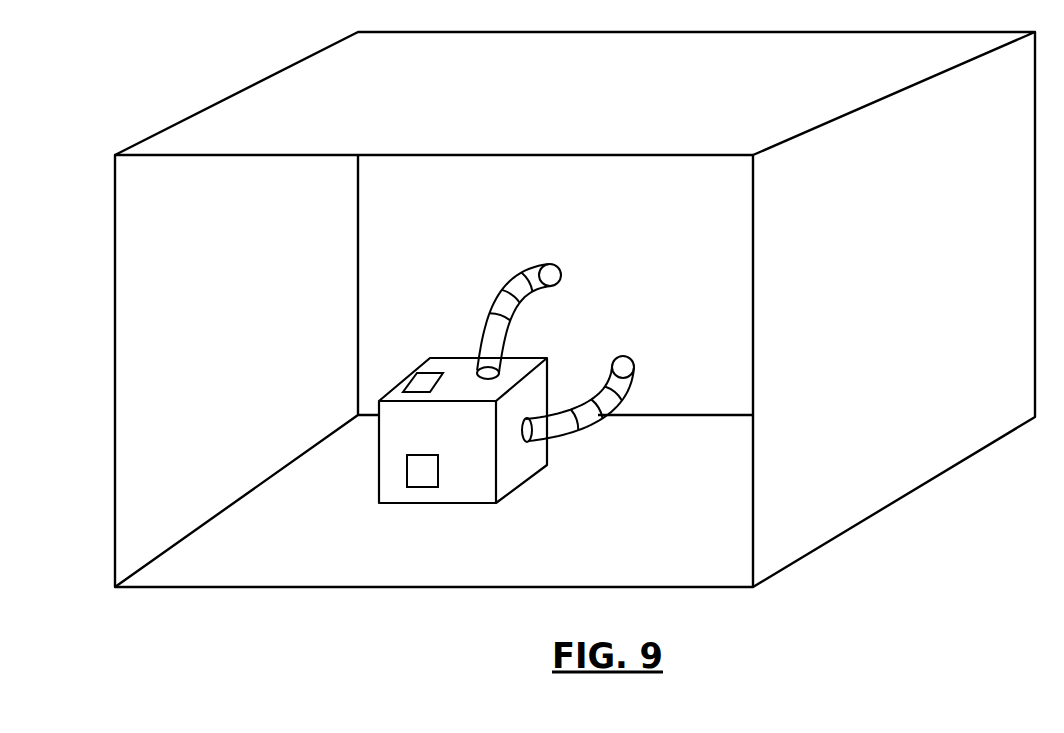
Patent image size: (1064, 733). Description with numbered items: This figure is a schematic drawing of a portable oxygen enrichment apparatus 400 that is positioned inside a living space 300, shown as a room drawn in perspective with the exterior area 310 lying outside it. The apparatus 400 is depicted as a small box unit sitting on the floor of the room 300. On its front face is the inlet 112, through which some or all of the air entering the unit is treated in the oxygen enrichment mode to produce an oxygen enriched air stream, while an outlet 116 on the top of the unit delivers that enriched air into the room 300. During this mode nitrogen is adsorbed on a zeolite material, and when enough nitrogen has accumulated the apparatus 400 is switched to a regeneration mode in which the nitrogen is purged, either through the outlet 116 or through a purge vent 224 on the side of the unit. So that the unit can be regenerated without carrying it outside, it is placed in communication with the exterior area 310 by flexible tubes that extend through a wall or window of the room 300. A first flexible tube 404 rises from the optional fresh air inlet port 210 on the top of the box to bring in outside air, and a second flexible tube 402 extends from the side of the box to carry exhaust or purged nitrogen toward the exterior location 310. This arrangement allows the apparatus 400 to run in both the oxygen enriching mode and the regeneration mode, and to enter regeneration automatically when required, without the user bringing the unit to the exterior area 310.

The living space 300 is at (298, 100).
The oxygen enrichment apparatus 400 is at (390, 242).
The exterior area 310 is at (62, 361).
The outlet 116 is at (428, 386).
The fresh air inlet port 210 is at (480, 365).
The inlet 112 is at (417, 477).
The purge vent 224 is at (525, 441).
The flexible tube 404 is at (561, 268).
The flexible tube 402 is at (634, 371).